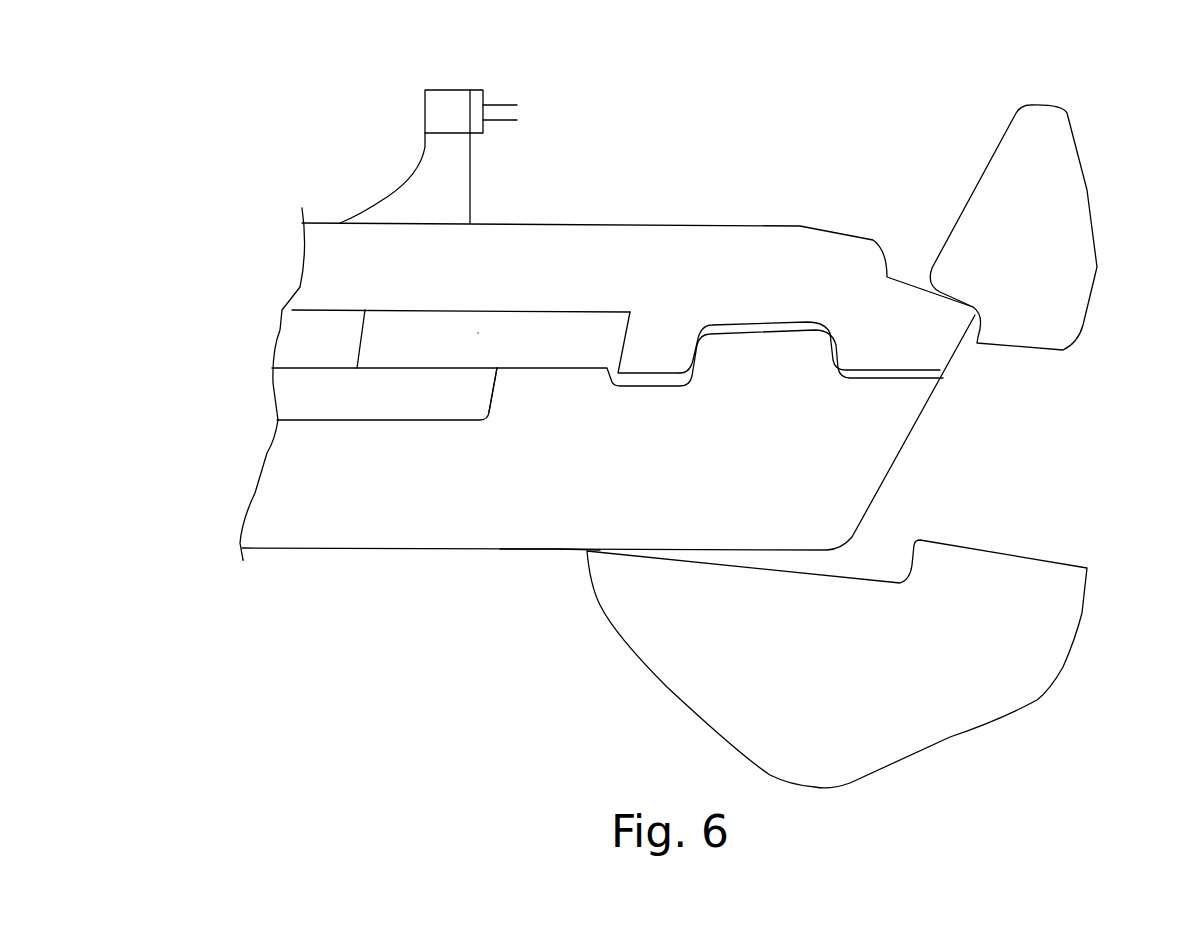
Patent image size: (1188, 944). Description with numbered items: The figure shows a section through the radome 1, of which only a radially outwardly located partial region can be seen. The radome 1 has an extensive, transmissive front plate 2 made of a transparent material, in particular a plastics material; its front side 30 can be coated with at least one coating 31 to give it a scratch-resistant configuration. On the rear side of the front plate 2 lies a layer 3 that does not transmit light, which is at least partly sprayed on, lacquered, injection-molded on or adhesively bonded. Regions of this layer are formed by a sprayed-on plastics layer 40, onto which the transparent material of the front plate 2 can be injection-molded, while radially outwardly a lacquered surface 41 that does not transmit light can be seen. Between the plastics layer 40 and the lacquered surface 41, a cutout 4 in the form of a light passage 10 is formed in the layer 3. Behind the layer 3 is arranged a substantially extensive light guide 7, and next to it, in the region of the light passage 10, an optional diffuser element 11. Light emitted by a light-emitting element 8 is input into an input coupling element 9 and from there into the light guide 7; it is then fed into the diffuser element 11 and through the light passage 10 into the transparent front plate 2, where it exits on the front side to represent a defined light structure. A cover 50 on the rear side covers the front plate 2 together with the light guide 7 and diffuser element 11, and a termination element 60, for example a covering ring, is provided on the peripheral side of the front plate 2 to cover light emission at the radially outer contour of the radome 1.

The radome 1 is at (306, 641).
The front plate 2 is at (283, 510).
The layer that does not transmit light 3 is at (437, 427).
The cutout 4 is at (530, 420).
The light guide 7 is at (300, 335).
The light-emitting element 8 is at (453, 107).
The input coupling element 9 is at (440, 175).
The light passage 10 is at (583, 330).
The diffuser element 11 is at (478, 333).
The front side 30 is at (530, 560).
The coating 31 is at (577, 560).
The sprayed-on plastics layer 40 is at (292, 398).
The lacquered surface 41 is at (773, 317).
The cover 50 is at (670, 290).
The termination element 60 is at (1065, 268).